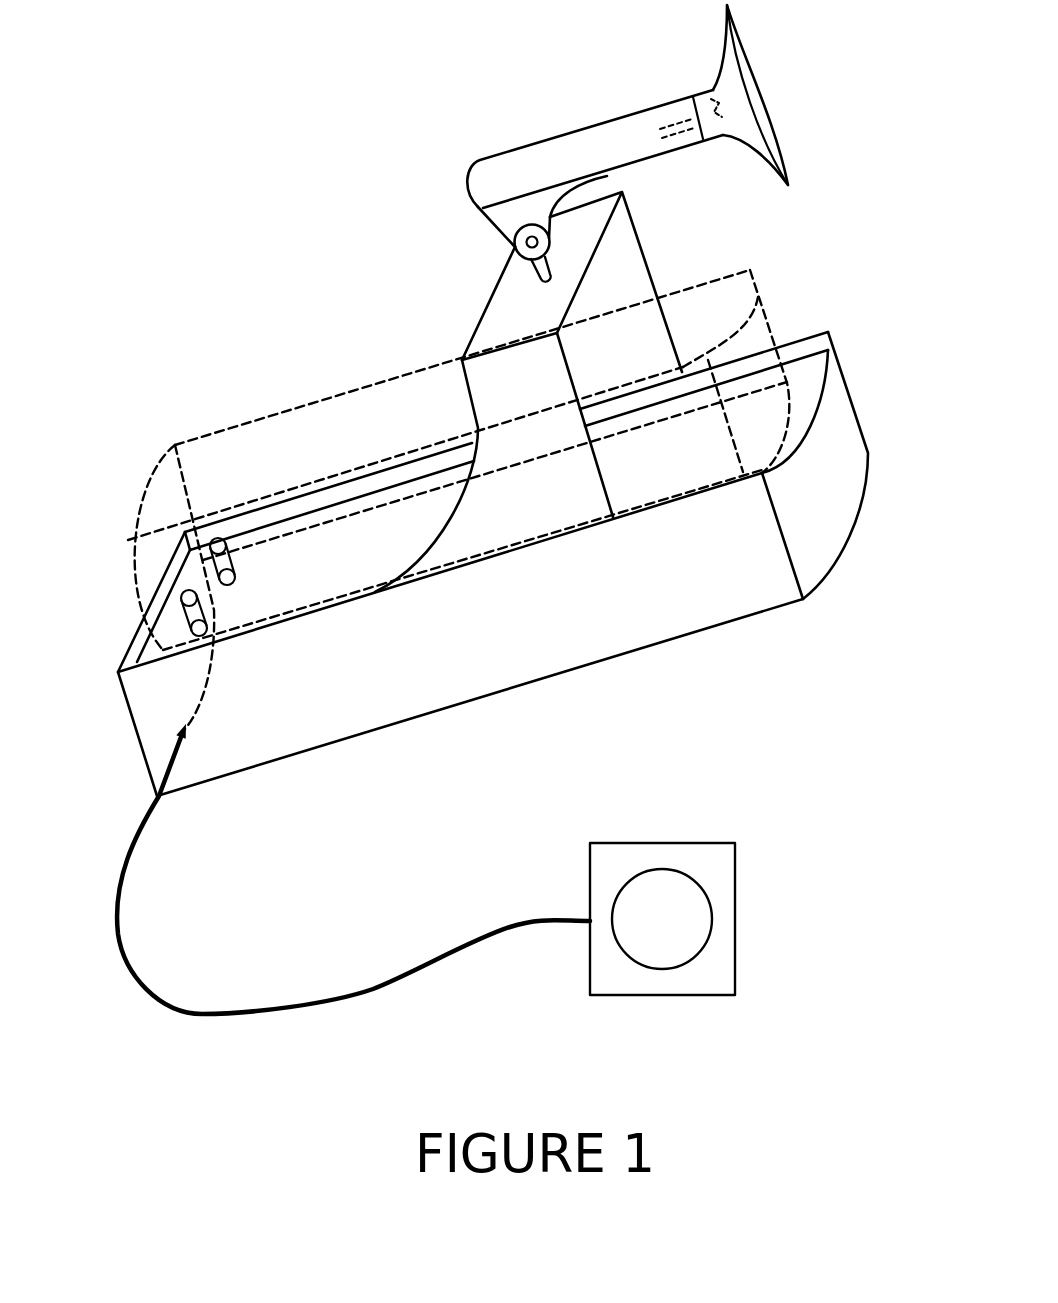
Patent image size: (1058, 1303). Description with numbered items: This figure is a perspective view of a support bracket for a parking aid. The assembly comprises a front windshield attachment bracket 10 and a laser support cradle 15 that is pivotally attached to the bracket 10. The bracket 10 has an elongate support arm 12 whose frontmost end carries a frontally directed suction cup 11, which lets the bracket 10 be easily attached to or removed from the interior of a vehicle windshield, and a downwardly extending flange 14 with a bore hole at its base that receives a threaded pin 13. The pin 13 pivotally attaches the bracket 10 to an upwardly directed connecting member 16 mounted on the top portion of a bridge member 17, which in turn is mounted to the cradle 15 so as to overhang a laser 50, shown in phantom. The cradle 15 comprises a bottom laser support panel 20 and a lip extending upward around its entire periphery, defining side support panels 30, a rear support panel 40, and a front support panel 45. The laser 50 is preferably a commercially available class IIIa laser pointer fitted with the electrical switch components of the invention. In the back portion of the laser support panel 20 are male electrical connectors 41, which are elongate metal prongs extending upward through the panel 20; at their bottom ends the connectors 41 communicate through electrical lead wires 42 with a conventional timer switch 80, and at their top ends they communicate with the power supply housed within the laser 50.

The front windshield attachment bracket 10 is at (518, 130).
The suction cup 11 is at (755, 103).
The elongate support arm 12 is at (468, 193).
The threaded pin 13 is at (507, 247).
The downwardly extending flange 14 is at (536, 219).
The laser support cradle 15 is at (833, 604).
The connecting member 16 is at (490, 298).
The bridge member 17 is at (475, 392).
The laser support panel 20 is at (309, 578).
The side support panels 30 is at (300, 505).
The rear support panel 40 is at (118, 671).
The male electrical connectors 41 is at (210, 558).
The electrical lead wires 42 is at (370, 991).
The front support panel 45 is at (817, 407).
The laser 50 is at (730, 293).
The timer switch 80 is at (735, 909).